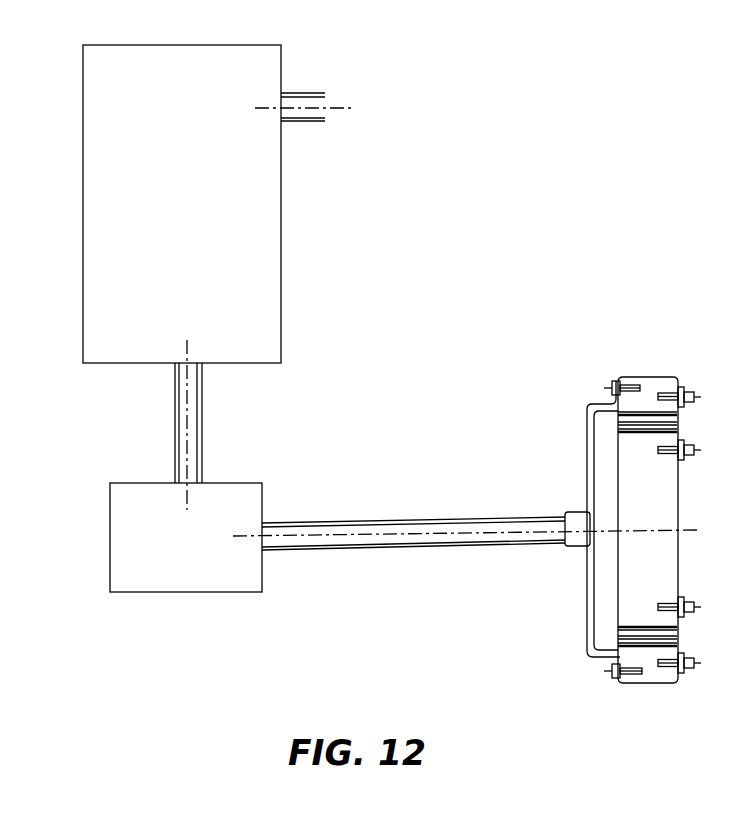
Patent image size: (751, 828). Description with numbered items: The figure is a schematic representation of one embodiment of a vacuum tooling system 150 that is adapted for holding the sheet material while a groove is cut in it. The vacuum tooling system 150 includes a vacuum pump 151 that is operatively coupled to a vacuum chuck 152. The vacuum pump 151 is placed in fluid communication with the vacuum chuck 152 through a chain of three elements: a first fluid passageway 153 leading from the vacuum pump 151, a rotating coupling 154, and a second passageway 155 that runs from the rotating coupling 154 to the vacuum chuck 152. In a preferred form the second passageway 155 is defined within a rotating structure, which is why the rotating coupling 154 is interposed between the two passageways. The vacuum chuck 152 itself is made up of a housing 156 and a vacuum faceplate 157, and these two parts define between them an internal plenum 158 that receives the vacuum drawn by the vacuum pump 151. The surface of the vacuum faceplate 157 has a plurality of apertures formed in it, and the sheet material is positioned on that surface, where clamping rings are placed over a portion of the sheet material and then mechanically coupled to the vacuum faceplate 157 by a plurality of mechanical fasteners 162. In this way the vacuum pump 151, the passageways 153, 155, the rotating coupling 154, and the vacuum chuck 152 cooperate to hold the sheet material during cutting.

The vacuum tooling system 150 is at (418, 136).
The vacuum pump 151 is at (281, 202).
The vacuum chuck 152 is at (652, 383).
The first fluid passageway 153 is at (175, 450).
The rotating coupling 154 is at (229, 500).
The second passageway 155 is at (400, 518).
The housing 156 is at (600, 659).
The vacuum faceplate 157 is at (668, 487).
The internal plenum 158 is at (601, 430).
The mechanical fasteners 162 is at (690, 601).